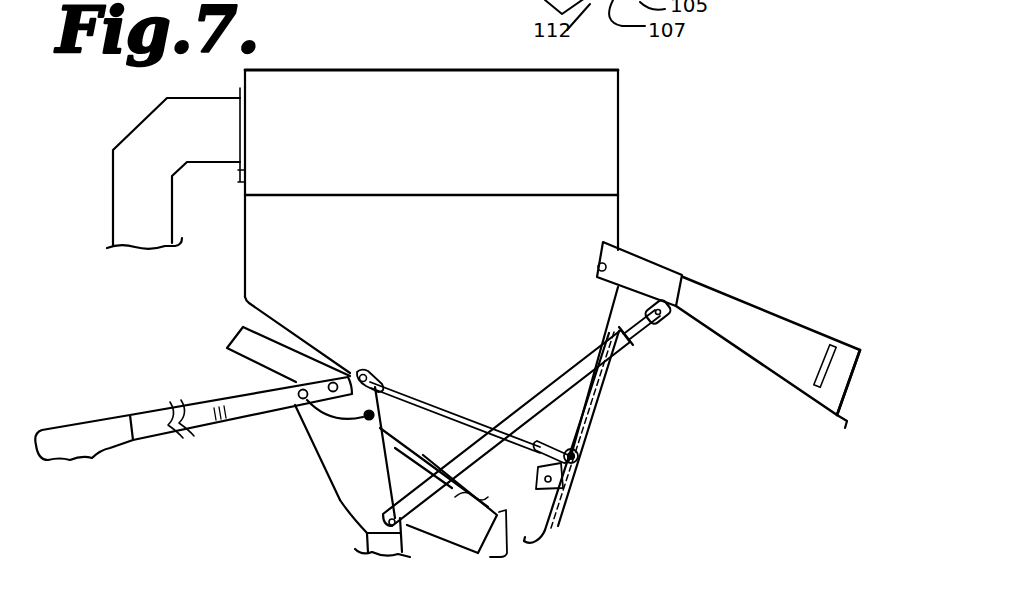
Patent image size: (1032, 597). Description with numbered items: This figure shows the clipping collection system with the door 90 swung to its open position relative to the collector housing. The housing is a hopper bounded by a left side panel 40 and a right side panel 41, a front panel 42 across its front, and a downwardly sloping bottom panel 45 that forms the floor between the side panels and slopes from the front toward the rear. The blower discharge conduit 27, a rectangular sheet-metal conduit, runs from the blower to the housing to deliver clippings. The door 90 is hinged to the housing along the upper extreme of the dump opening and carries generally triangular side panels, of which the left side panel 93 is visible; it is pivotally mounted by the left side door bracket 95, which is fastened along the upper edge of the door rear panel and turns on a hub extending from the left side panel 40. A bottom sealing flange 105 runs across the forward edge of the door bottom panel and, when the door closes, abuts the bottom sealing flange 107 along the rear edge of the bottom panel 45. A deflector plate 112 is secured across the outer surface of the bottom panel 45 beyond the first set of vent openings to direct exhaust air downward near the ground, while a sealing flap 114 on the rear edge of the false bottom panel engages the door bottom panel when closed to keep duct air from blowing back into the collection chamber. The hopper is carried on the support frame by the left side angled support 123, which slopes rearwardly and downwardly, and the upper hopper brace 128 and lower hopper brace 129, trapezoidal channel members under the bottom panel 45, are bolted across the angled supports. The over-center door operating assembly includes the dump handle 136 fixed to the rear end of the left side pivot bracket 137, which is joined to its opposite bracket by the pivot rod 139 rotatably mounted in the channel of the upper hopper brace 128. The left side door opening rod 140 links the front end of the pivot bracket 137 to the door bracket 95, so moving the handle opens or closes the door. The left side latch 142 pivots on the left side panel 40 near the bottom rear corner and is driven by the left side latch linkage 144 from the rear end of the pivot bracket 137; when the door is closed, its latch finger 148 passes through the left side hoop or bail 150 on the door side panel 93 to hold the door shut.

The blower discharge conduit 27 is at (132, 128).
The left side panel 40 is at (428, 132).
The right side panel 41 is at (618, 217).
The front panel 42 is at (245, 252).
The bottom panel 45 is at (248, 305).
The door 90 is at (862, 348).
The left side panel of door 93 is at (720, 303).
The left side door bracket 95 is at (648, 259).
The bottom sealing flange 105 is at (843, 427).
The bottom sealing flange 107 is at (535, 543).
The deflector plate 112 is at (490, 552).
The sealing flap 114 is at (560, 528).
The left side angled support 123 is at (232, 352).
The upper hopper brace 128 is at (388, 428).
The lower hopper brace 129 is at (465, 455).
The dump handle 136 is at (150, 382).
The left side pivot bracket 137 is at (330, 478).
The pivot rod 139 is at (308, 434).
The left side door opening rod 140 is at (553, 388).
The left side latch 142 is at (547, 468).
The left side latch linkage 144 is at (430, 400).
The latch finger 148 is at (593, 460).
The left side hoop or bail 150 is at (833, 343).